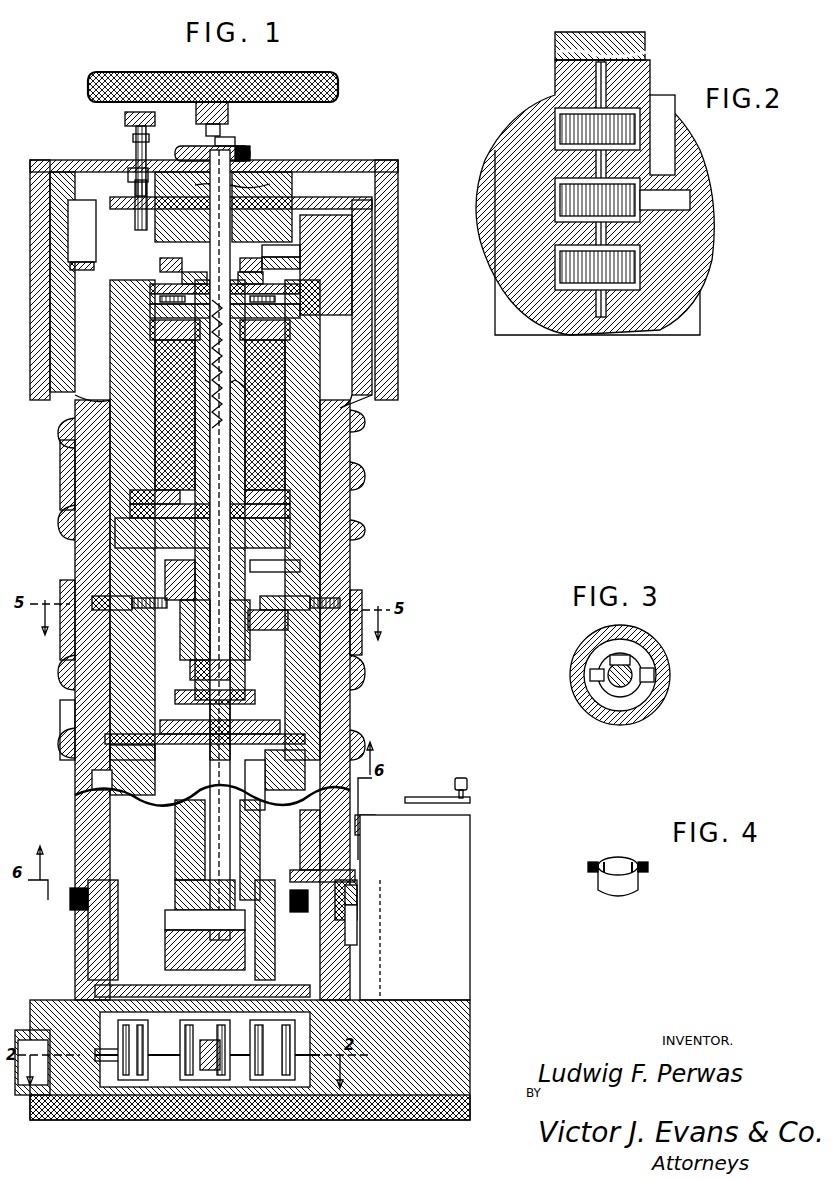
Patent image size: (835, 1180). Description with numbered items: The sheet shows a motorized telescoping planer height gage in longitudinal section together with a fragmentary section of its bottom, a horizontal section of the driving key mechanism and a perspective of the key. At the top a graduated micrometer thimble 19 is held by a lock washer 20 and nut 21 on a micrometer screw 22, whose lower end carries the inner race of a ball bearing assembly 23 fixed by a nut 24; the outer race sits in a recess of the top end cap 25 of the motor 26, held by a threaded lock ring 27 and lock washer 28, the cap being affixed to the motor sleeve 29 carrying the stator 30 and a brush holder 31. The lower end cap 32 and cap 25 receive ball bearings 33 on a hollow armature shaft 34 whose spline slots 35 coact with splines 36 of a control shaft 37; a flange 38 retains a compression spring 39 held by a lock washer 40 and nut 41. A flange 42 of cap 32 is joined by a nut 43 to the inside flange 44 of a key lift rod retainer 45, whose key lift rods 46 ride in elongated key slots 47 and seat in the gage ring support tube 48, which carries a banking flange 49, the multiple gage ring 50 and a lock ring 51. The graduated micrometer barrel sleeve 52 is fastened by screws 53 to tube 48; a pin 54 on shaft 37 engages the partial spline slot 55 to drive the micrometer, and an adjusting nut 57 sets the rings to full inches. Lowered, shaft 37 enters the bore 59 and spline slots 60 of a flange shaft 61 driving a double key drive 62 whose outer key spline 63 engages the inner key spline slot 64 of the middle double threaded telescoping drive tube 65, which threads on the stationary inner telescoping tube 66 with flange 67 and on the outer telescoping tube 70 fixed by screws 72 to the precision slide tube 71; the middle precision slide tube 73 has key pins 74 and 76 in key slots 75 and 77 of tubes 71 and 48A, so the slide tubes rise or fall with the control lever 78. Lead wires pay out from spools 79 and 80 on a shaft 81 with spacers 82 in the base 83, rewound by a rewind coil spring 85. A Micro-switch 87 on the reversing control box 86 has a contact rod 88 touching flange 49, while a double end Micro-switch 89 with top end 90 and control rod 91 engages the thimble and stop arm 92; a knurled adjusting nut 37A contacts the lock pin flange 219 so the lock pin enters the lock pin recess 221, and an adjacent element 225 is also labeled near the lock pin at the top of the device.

In FIG. 1, the graduated micrometer thimble 19 is at (400, 240).
In FIG. 1, the lock washer 20 is at (250, 154).
In FIG. 1, the nut 21 is at (226, 135).
In FIG. 1, the micrometer screw 22 is at (245, 232).
In FIG. 1, the ball bearing assembly 23 is at (262, 266).
In FIG. 1, the nut or fastener 24 is at (263, 280).
In FIG. 1, the top end cap 25 is at (300, 290).
In FIG. 1, the motor 26 is at (290, 465).
In FIG. 1, the threaded lock ring 27 is at (300, 250).
In FIG. 1, the lock washer 28 is at (300, 264).
In FIG. 1, the motor sleeve 29 is at (285, 370).
In FIG. 1, the stator 30 is at (290, 330).
In FIG. 1, the brush holder 31 is at (130, 496).
In FIG. 1, the lower end cap 32 is at (290, 540).
In FIG. 1, the ball bearings 33 is at (290, 512).
In FIG. 1, the hollow armature shaft 34 is at (245, 390).
In FIG. 1, the spline slots 35 is at (230, 668).
In FIG. 1, the splines 36 is at (232, 568).
In FIG. 1, the control shaft 37 is at (232, 650).
In FIG. 1, the knurled adjusting nut 37A is at (140, 72).
In FIG. 1, the flange 38 is at (200, 430).
In FIG. 1, the compression spring 39 is at (78, 412).
In FIG. 1, the lock washer 40 is at (300, 300).
In FIG. 1, the nut 41 is at (300, 312).
In FIG. 1, the flange 42 is at (277, 570).
In FIG. 1, the nut 43 is at (270, 632).
In FIG. 1, the inside flange 44 is at (165, 580).
In FIG. 1, the key lift rod retainer 45 is at (150, 625).
In FIG. 1, the key lift rods 46 is at (92, 602).
In FIG. 1, the elongated key slots 47 is at (80, 520).
In FIG. 1, the gage ring support tube 48 is at (72, 700).
In FIG. 1, the support telescoping slide tube 48A is at (100, 728).
In FIG. 1, the banking flange 49 is at (355, 870).
In FIG. 1, the multiple gage ring 50 is at (365, 520).
In FIG. 1, the lock ring 51 is at (372, 398).
In FIG. 1, the graduated micrometer barrel sleeve 52 is at (372, 204).
In FIG. 1, the screws 53 is at (320, 240).
In FIG. 1, the pin 54 is at (268, 188).
In FIG. 1, the partial spline slot 55 is at (215, 150).
In FIG. 1, the adjusting nut 57 is at (70, 900).
In FIG. 1, the bore 59 is at (220, 770).
In FIG. 1, the spline slots 60 is at (245, 694).
In FIG. 1, the flange shaft 61 is at (232, 710).
In FIG. 3, the flange shaft 61 is at (628, 668).
In FIG. 1, the double key drive 62 is at (175, 900).
In FIG. 3, the double key drive 62 is at (650, 695).
In FIG. 4, the double key drive 62 is at (616, 858).
In FIG. 1, the outer key spline 63 is at (250, 940).
In FIG. 3, the outer key spline 63 is at (590, 675).
In FIG. 4, the outer key spline 63 is at (588, 868).
In FIG. 1, the inner key spline slot 64 is at (168, 920).
In FIG. 3, the inner key spline slot 64 is at (654, 675).
In FIG. 1, the middle double threaded telescoping drive tube 65 is at (110, 878).
In FIG. 3, the middle double threaded telescoping drive tube 65 is at (615, 697).
In FIG. 1, the stationary inner telescoping tube 66 is at (252, 785).
In FIG. 1, the flange 67 is at (262, 730).
In FIG. 1, the outer telescoping tube 70 is at (275, 960).
In FIG. 3, the outer telescoping tube 70 is at (640, 712).
In FIG. 1, the inner telescoping precision slide tube 71 is at (352, 935).
In FIG. 1, the screws 72 is at (160, 992).
In FIG. 1, the middle precision slide tube 73 is at (320, 850).
In FIG. 1, the key pin 74 is at (356, 822).
In FIG. 1, the key slot 75 is at (290, 846).
In FIG. 1, the key pin 76 is at (96, 780).
In FIG. 1, the key slot 77 is at (110, 766).
In FIG. 1, the control lever 78 is at (467, 796).
In FIG. 1, the spool 79 is at (145, 1082).
In FIG. 2, the spool 79 is at (570, 128).
In FIG. 1, the spool 80 is at (200, 1082).
In FIG. 2, the spool 80 is at (570, 198).
In FIG. 1, the shaft 81 is at (105, 1062).
In FIG. 2, the shaft 81 is at (606, 100).
In FIG. 1, the spacers 82 is at (220, 1070).
In FIG. 2, the spacers 82 is at (640, 202).
In FIG. 1, the base 83 is at (455, 1050).
In FIG. 2, the base 83 is at (530, 320).
In FIG. 1, the rewind coil spring 85 is at (278, 1082).
In FIG. 2, the rewind coil spring 85 is at (575, 262).
In FIG. 1, the reversing control box 86 is at (455, 912).
In FIG. 1, the Micro-switch 87 is at (358, 905).
In FIG. 1, the contact rod 88 is at (358, 895).
In FIG. 1, the double end Micro-switch 89 is at (92, 228).
In FIG. 1, the top end 90 is at (136, 200).
In FIG. 1, the control rod 91 is at (82, 253).
In FIG. 1, the stop arm 92 is at (55, 360).
In FIG. 1, the flange 219 is at (126, 118).
In FIG. 1, the lock pin recess 221 is at (128, 172).
In FIG. 1, the washer 225 is at (133, 138).